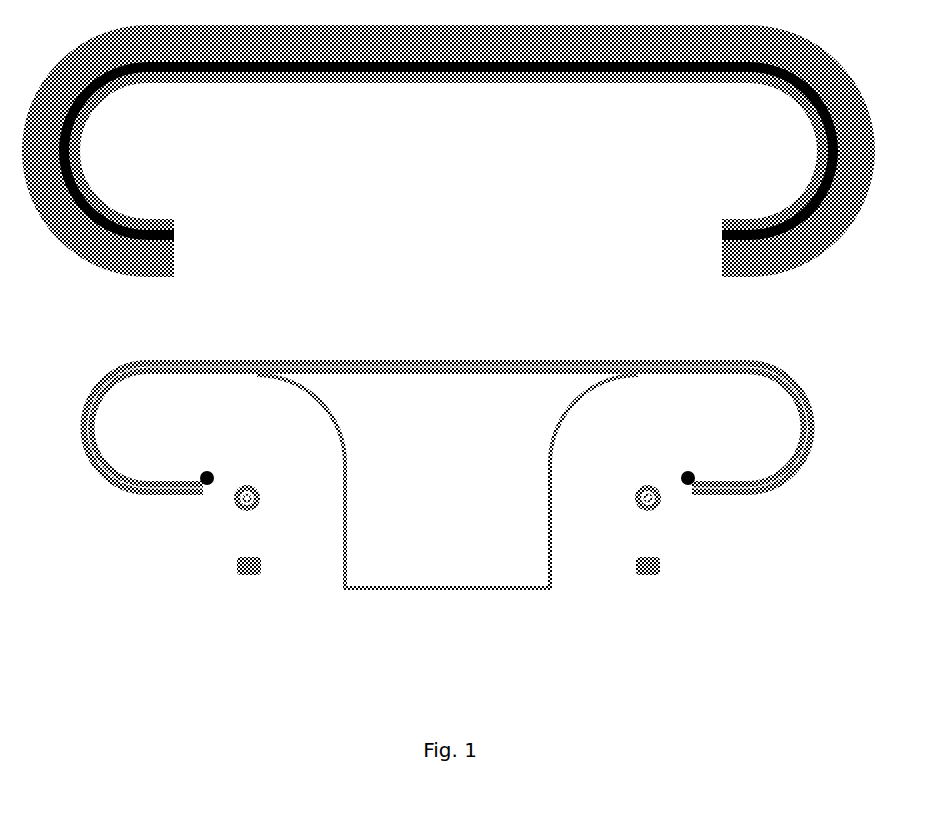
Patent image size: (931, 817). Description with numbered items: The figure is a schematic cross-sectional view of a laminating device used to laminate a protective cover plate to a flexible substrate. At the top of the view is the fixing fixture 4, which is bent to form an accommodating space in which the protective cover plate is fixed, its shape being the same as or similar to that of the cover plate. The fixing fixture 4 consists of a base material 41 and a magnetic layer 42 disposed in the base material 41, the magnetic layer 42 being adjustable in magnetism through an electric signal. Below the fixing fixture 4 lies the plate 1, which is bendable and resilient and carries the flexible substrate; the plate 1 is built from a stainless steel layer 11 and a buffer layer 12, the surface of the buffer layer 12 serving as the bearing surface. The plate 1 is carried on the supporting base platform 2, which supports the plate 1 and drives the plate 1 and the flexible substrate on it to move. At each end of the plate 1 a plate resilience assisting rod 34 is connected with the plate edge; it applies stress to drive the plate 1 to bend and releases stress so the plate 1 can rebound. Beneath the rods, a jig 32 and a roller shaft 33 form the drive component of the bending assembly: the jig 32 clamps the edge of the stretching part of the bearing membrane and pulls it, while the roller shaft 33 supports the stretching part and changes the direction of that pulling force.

The plate 1 is at (447, 369).
The stainless steel layer 11 is at (497, 372).
The buffer layer 12 is at (452, 368).
The supporting base platform 2 is at (497, 553).
The jig 32 is at (237, 567).
The roller shaft 33 is at (235, 505).
The plate resilience assisting rod 34 is at (207, 470).
The fixing fixture 4 is at (448, 151).
The base material 41 is at (372, 78).
The magnetic layer 42 is at (432, 67).